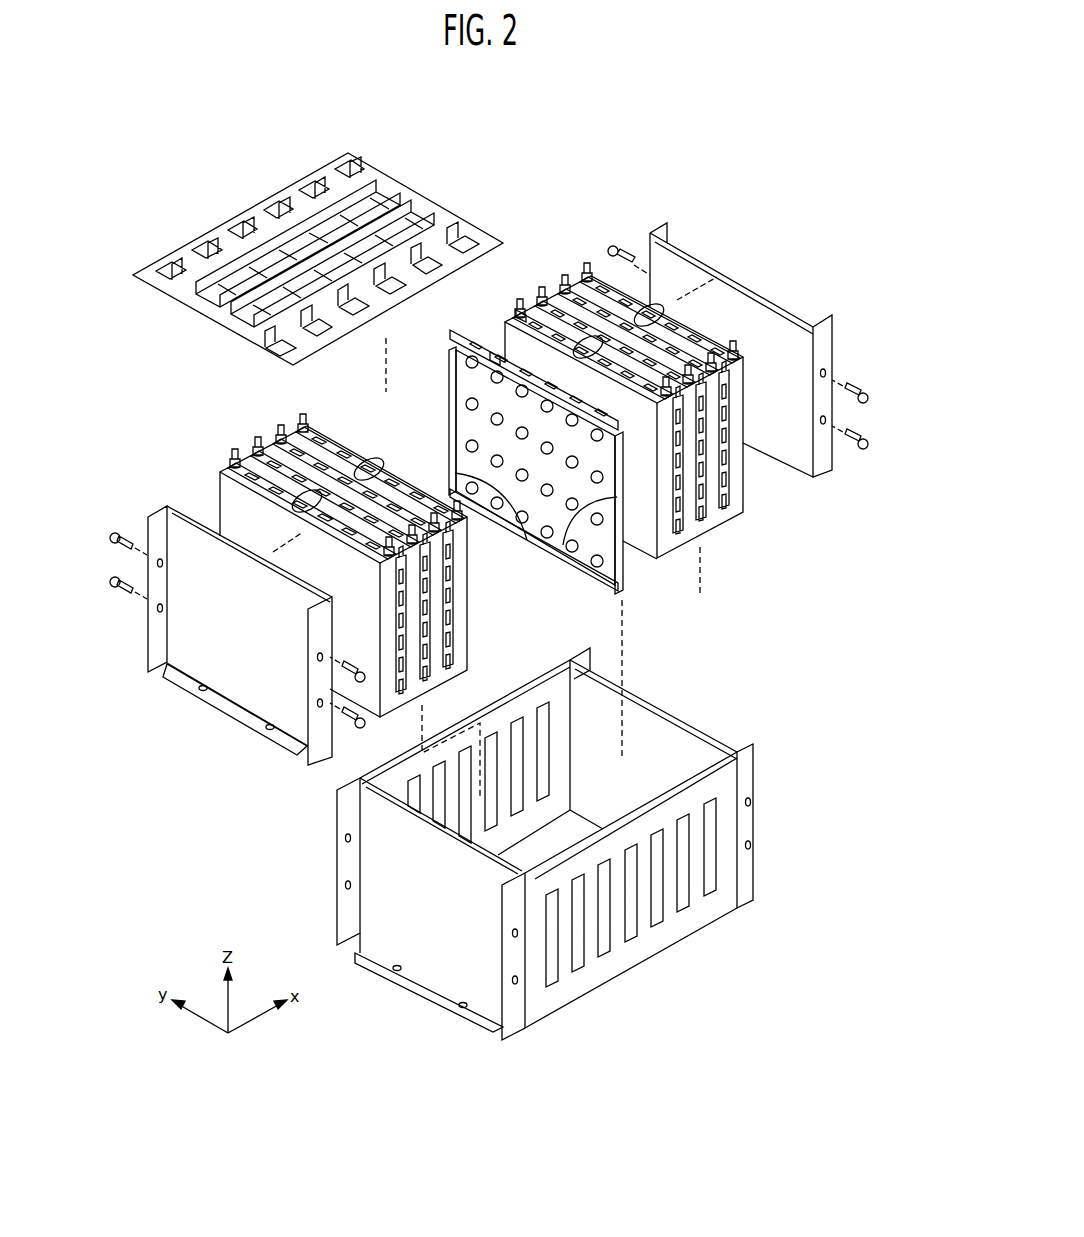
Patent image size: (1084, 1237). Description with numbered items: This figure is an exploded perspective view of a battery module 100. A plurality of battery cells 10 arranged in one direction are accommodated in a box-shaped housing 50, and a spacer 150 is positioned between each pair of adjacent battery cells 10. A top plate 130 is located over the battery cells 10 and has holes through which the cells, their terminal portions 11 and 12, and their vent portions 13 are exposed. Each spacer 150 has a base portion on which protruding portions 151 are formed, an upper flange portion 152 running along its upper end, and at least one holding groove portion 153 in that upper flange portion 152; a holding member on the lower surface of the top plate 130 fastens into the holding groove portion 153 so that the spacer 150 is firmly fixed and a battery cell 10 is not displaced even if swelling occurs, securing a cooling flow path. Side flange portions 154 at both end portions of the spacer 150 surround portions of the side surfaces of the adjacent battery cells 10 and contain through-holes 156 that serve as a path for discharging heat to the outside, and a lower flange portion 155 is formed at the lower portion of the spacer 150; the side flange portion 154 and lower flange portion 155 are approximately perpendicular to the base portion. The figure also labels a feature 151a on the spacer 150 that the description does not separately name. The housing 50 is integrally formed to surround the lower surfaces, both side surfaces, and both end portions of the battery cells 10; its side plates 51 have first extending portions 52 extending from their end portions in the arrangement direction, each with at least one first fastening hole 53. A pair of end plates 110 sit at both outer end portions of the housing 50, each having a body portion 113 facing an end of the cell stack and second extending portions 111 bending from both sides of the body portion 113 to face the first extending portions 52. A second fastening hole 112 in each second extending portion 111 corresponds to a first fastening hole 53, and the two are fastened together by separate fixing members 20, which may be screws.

The battery module 100 is at (222, 165).
The top plate 130 is at (447, 224).
The battery cell 10 is at (736, 503).
The terminal portion 11 is at (586, 262).
The terminal portion 12 is at (718, 340).
The vent portion 13 is at (657, 317).
The spacer 150 is at (483, 390).
The protruding portion 151 is at (466, 407).
The upper rail 151a is at (455, 334).
The upper flange portion 152 is at (496, 356).
The holding groove portion 153 is at (521, 310).
The side flange portion 154 is at (563, 545).
The lower flange portion 155 is at (503, 526).
The through-hole 156 is at (450, 445).
The end plate 110 is at (795, 304).
The second extending portion 111 is at (832, 317).
The second fastening hole 112 is at (826, 421).
The body portion 113 is at (207, 653).
The fixing member 20 is at (357, 668).
The housing 50 is at (638, 745).
The side plate 51 is at (665, 935).
The first extending portion 52 is at (752, 742).
The first fastening hole 53 is at (752, 802).